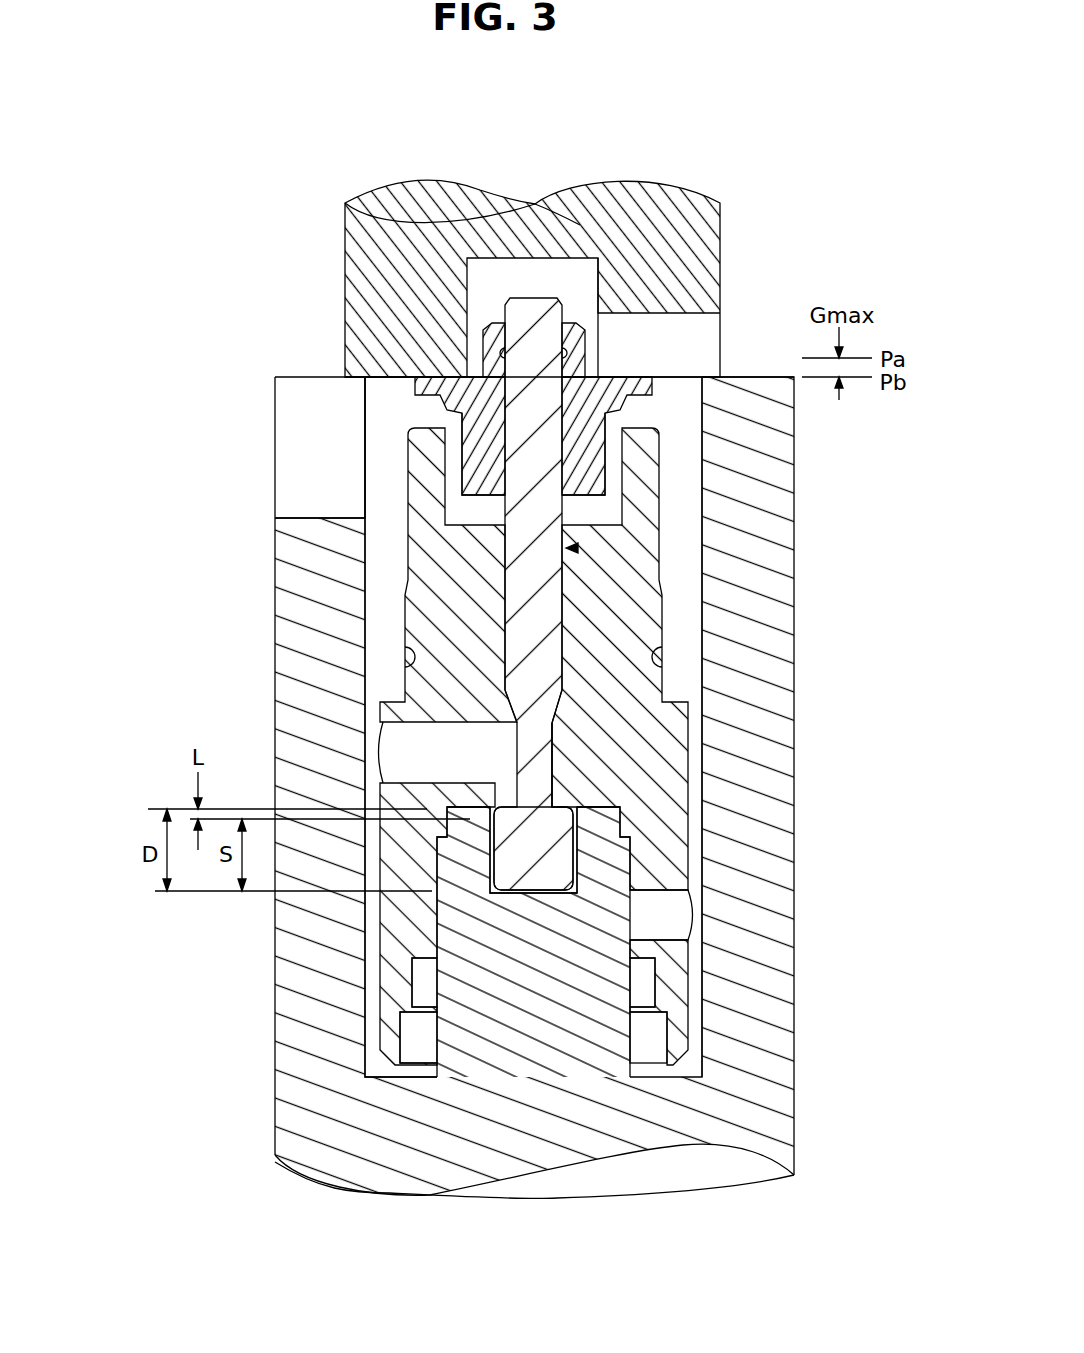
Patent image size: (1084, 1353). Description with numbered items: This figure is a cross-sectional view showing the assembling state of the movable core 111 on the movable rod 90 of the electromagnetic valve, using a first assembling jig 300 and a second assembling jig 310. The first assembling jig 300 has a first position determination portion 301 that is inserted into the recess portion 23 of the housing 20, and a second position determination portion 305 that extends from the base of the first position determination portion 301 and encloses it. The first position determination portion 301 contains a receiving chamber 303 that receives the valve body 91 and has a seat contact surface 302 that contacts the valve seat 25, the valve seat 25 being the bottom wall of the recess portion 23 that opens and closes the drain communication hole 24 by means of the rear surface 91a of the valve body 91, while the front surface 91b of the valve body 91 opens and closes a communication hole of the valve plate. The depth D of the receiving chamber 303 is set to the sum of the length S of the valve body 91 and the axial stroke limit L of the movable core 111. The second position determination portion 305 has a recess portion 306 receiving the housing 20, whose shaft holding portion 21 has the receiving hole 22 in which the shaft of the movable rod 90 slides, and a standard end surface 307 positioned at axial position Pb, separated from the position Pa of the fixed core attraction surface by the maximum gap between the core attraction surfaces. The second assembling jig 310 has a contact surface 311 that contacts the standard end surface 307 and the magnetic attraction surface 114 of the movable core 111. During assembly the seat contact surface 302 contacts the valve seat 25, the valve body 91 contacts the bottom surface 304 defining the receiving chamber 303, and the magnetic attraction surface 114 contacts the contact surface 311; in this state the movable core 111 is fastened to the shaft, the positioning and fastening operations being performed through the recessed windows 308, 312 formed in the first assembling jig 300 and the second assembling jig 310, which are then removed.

The housing 20 is at (630, 637).
The shaft holding portion 21 is at (597, 591).
The receiving hole 22 is at (503, 611).
The recess portion 23 is at (525, 893).
The drain communication hole 24 is at (567, 783).
The valve seat 25 is at (480, 797).
The movable rod 90 is at (576, 548).
The valve body 91 is at (600, 888).
The rear surface of the valve body 91a is at (500, 790).
The front surface of the valve body 91b is at (650, 1030).
The movable core 111 is at (605, 448).
The magnetic attraction surface of the movable core 114 is at (446, 378).
The first assembling jig 300 is at (795, 938).
The first position determination portion 301 is at (545, 1045).
The seat contact surface 302 is at (578, 805).
The receiving chamber 303 is at (577, 818).
The bottom surface 304 is at (575, 875).
The second position determination portion 305 is at (770, 672).
The recess portion 306 is at (368, 640).
The standard end surface 307 is at (748, 375).
The recessed window 308 is at (290, 452).
The second assembling jig 310 is at (345, 247).
The contact surface 311 is at (345, 375).
The recessed window 312 is at (670, 330).